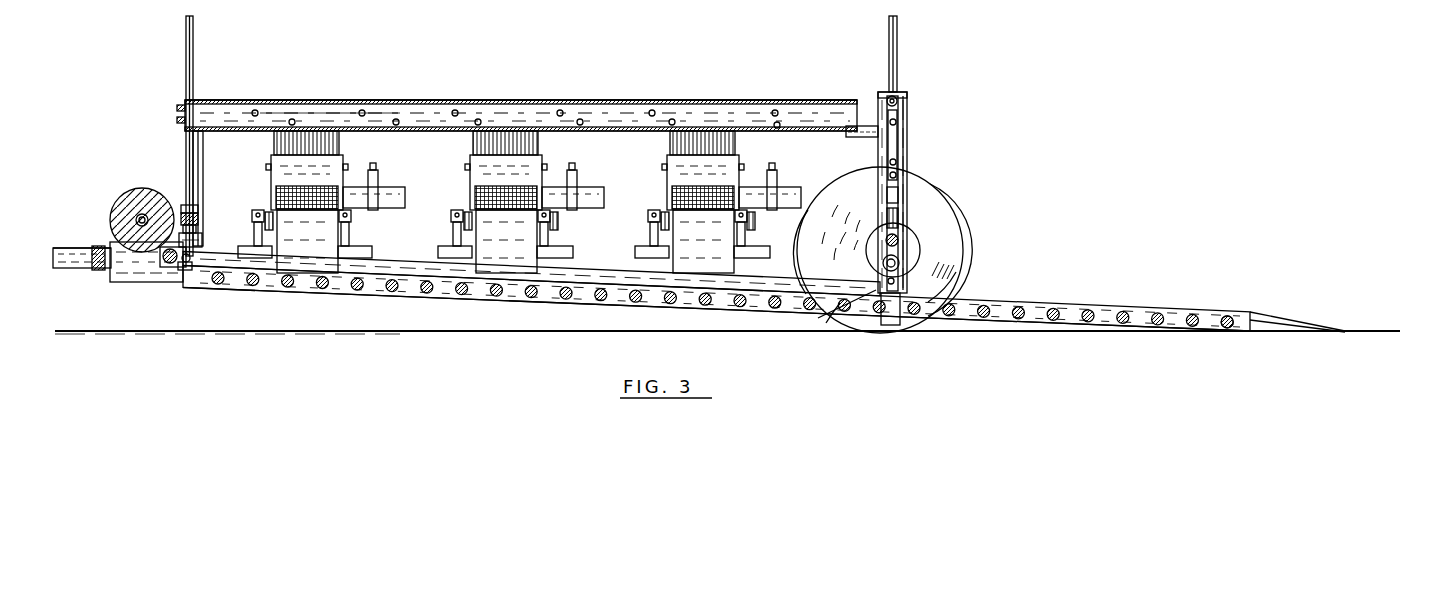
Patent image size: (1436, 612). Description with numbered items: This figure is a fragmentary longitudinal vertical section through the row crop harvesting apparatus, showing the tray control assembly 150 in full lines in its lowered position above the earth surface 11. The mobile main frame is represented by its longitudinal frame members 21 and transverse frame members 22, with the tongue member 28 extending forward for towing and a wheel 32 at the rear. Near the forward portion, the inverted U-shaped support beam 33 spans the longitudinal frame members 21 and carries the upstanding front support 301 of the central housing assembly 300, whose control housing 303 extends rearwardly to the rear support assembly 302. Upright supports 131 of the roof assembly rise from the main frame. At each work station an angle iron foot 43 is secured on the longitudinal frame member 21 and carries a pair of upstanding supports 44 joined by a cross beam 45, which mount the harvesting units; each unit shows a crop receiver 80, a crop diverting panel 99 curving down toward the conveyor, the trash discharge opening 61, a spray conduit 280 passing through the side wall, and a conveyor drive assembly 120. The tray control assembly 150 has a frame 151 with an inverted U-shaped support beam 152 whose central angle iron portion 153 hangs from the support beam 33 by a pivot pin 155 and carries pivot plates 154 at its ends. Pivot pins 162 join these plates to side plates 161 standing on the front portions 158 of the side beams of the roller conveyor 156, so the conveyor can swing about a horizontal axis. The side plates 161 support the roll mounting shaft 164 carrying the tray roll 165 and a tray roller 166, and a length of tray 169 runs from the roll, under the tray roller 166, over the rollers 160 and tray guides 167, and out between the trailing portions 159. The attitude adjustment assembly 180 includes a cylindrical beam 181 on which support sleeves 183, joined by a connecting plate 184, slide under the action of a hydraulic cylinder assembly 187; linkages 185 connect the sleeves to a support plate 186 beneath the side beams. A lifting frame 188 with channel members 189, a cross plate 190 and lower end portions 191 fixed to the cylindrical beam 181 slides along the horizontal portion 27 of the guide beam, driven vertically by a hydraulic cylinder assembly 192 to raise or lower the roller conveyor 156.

The earth surface 11 is at (312, 331).
The longitudinal frame members 21 is at (824, 252).
The transverse frame members 22 is at (88, 266).
The horizontal portion 27 is at (900, 194).
The tongue member 28 is at (70, 250).
The wheels 32 is at (940, 212).
The support beam 33 is at (188, 218).
The angle iron foot 43 is at (266, 252).
The supports 44 is at (252, 250).
The cross beam 45 is at (252, 218).
The trash discharge opening 61 is at (314, 196).
The crop receiver 80 is at (298, 112).
The crop diverting panel 99 is at (278, 180).
The conveyor drive assembly 120 is at (378, 188).
The upright supports 131 is at (186, 50).
The tray control assembly 150 is at (767, 304).
The frame 151 is at (380, 292).
The support beam 152 is at (202, 238).
The central angle iron portion 153 is at (165, 255).
The pivot plates 154 is at (188, 269).
The pivot pin 155 is at (187, 208).
The roller conveyor 156 is at (587, 302).
The front portions 158 is at (136, 280).
The trailing portions 159 is at (1217, 323).
The rollers 160 is at (728, 309).
The side plates 161 is at (102, 269).
The pivot pins 162 is at (186, 262).
The roll mounting shaft 164 is at (140, 214).
The tray roll 165 is at (128, 195).
The tray roller 166 is at (170, 262).
The tray guides 167 is at (417, 264).
The tray 169 is at (1278, 322).
The attitude adjustment assembly 180 is at (908, 115).
The cylindrical beam 181 is at (927, 271).
The support sleeves 183 is at (927, 268).
The connecting plate 184 is at (920, 229).
The linkage 185 is at (843, 309).
The support plate 186 is at (894, 327).
The hydraulic cylinder assembly 187 is at (896, 239).
The lifting frame 188 is at (905, 161).
The channel members 189 is at (880, 92).
The cross plate 190 is at (897, 92).
The lower end portions 191 is at (900, 250).
The hydraulic cylinder assembly 192 is at (894, 145).
The spray conduit 280 is at (266, 166).
The central housing assembly 300 is at (627, 99).
The front support 301 is at (196, 148).
The rear support assembly 302 is at (872, 137).
The control housing 303 is at (384, 100).